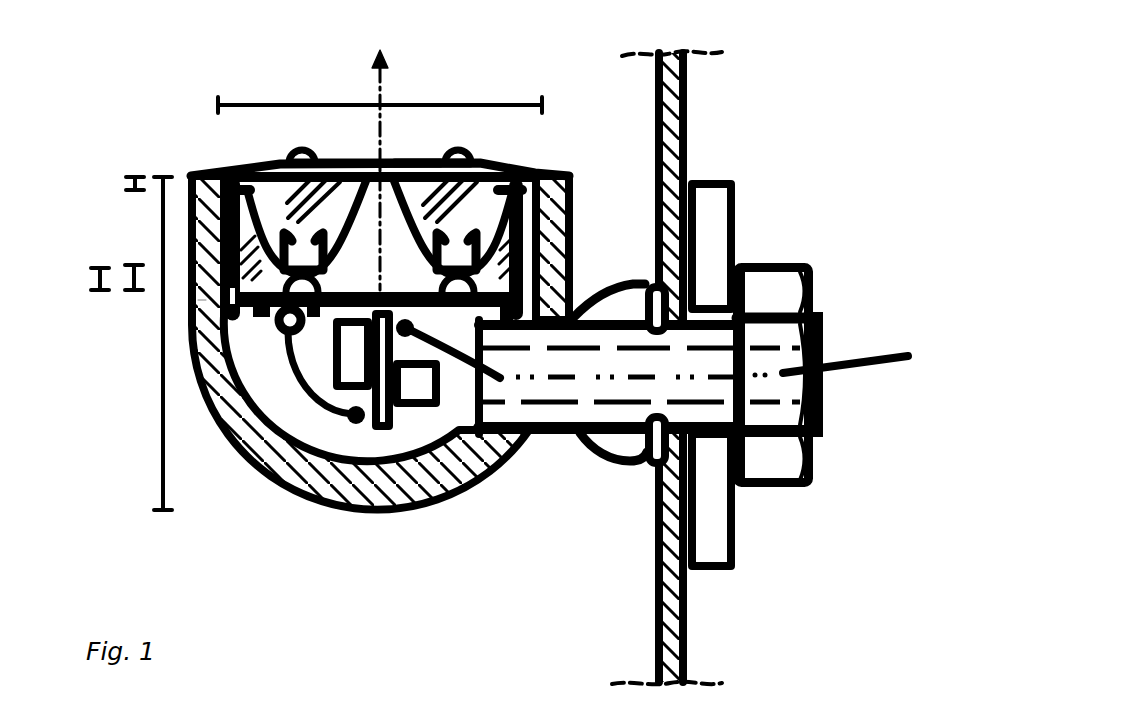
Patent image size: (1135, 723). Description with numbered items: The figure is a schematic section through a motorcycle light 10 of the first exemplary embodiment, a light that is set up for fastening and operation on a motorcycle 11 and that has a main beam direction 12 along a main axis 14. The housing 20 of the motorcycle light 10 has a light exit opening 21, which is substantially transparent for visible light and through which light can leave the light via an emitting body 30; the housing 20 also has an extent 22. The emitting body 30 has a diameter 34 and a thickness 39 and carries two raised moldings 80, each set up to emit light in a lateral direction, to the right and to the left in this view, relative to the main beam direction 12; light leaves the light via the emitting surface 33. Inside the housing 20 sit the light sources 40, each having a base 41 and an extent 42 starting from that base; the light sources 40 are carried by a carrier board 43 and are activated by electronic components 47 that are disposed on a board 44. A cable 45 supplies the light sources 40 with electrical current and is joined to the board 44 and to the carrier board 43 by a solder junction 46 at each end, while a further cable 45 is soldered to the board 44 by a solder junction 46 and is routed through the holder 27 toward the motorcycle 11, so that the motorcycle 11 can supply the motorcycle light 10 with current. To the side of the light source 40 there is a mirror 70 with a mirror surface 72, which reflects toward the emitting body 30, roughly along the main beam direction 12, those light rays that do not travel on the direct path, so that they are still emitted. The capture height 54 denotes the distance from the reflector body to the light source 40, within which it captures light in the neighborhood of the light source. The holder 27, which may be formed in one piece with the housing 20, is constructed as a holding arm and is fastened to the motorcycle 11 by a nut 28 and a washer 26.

The motorcycle light 10 is at (140, 106).
The motorcycle 11 is at (672, 92).
The main beam direction 12 is at (333, 143).
The main axis 14 is at (376, 77).
The housing 20 is at (310, 508).
The light exit opening 21 is at (293, 148).
The extent 22 is at (160, 218).
The washer 26 is at (720, 484).
The holder 27 is at (620, 438).
The nut 28 is at (790, 456).
The emitting body 30 is at (412, 168).
The emitting surface 33 is at (237, 168).
The diameter 34 is at (467, 103).
The thickness 39 is at (125, 182).
The light source 40 is at (527, 167).
The base 41 is at (352, 290).
The extent 42 is at (90, 284).
The carrier board 43 is at (428, 420).
The board 44 is at (360, 425).
The cable 45 is at (216, 436).
The solder junction 46 is at (300, 318).
The electronic components 47 is at (404, 422).
The capture height 54 is at (123, 272).
The mirror 70 is at (225, 276).
The mirror surface 72 is at (513, 170).
The raised moldings 80 is at (273, 160).